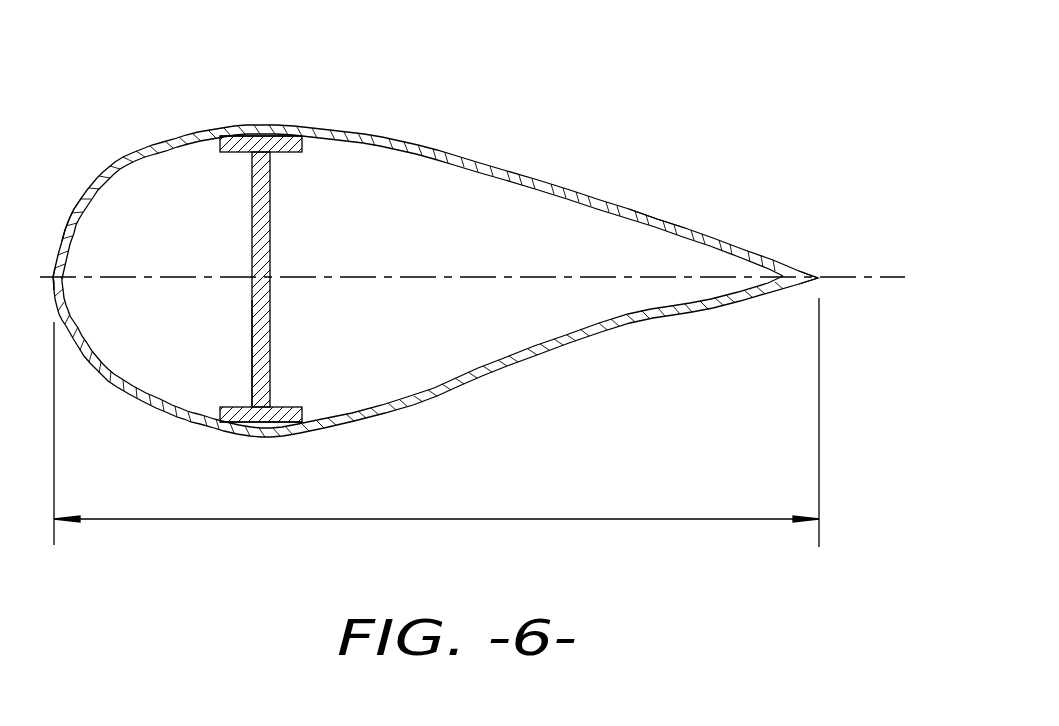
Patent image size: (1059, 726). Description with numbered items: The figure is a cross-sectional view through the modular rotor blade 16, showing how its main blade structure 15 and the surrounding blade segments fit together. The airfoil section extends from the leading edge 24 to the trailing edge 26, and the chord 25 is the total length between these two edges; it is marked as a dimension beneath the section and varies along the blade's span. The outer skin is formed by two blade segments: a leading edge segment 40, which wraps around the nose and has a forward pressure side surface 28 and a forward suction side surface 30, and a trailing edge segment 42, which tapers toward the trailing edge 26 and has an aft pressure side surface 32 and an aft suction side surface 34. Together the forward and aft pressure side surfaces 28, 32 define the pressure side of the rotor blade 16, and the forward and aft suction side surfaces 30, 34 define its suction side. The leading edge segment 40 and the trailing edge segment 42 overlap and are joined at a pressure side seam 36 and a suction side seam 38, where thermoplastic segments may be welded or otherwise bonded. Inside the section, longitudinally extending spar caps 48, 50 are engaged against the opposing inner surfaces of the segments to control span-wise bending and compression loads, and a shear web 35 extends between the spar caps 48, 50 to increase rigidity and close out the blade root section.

The main blade structure 15 is at (251, 368).
The rotor blade 16 is at (693, 88).
The leading edge 24 is at (50, 277).
The chord 25 is at (565, 519).
The trailing edge 26 is at (820, 280).
The forward pressure side surface 28 is at (140, 405).
The forward suction side surface 30 is at (138, 153).
The aft pressure side surface 32 is at (507, 367).
The aft suction side surface 34 is at (502, 165).
The shear web 35 is at (250, 247).
The pressure side seam 36 is at (245, 435).
The suction side seam 38 is at (277, 130).
The leading edge segment 40 is at (73, 194).
The trailing edge segment 42 is at (645, 212).
The spar cap 48 is at (283, 407).
The spar cap 50 is at (280, 153).